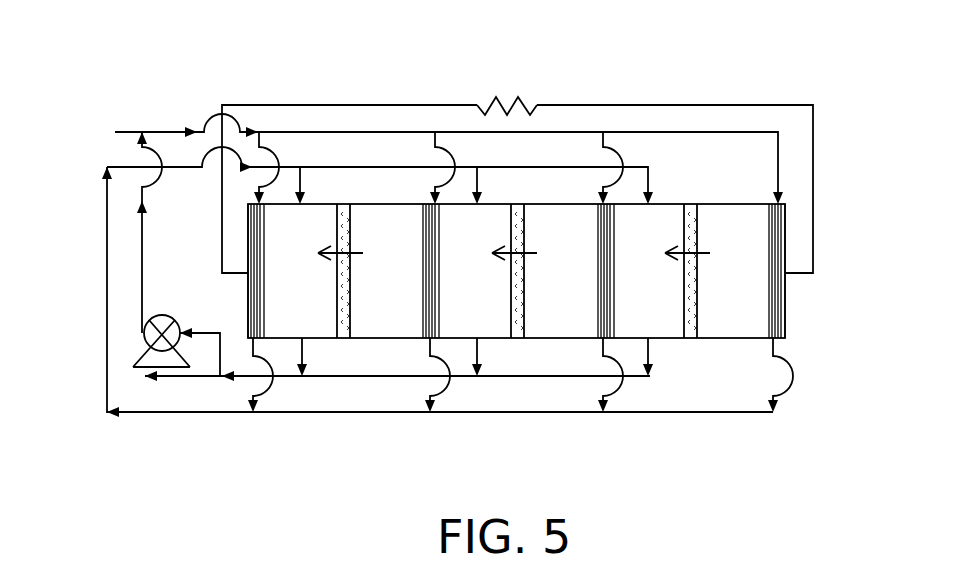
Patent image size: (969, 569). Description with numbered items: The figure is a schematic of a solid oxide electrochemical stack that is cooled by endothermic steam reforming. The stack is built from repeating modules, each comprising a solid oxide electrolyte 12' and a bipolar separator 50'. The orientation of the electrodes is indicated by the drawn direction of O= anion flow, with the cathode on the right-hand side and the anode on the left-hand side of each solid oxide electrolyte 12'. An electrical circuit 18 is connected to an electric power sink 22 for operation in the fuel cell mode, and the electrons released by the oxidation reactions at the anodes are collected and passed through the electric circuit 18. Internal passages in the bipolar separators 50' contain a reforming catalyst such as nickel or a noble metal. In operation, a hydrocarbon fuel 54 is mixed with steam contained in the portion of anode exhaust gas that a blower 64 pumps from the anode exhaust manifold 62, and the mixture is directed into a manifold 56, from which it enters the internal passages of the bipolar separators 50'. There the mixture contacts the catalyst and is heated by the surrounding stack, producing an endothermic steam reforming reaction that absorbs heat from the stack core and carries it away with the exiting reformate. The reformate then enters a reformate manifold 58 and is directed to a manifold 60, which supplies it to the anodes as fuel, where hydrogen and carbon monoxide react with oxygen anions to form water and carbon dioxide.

The solid oxide electrolyte 12' is at (572, 353).
The electrical circuit 18 is at (818, 144).
The electric power sink 22 is at (508, 97).
The bipolar separator 50' is at (579, 276).
The hydrocarbon fuel 54 is at (125, 131).
The manifold 56 is at (320, 132).
The reformate manifold 58 is at (220, 412).
The manifold 60 is at (372, 167).
The anode exhaust manifold 62 is at (383, 376).
The blower 64 is at (167, 330).